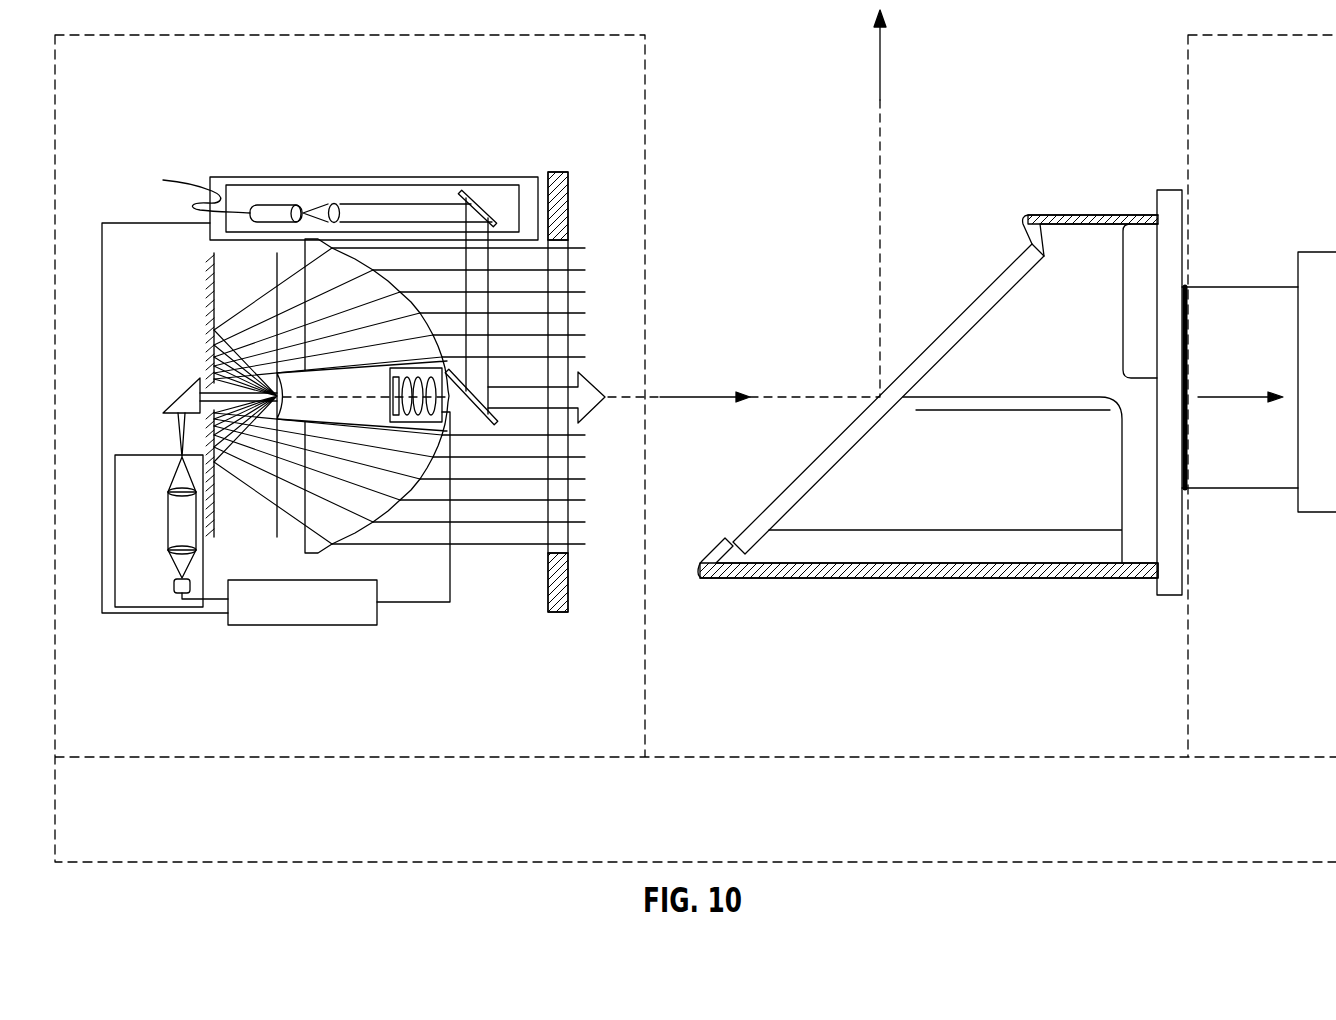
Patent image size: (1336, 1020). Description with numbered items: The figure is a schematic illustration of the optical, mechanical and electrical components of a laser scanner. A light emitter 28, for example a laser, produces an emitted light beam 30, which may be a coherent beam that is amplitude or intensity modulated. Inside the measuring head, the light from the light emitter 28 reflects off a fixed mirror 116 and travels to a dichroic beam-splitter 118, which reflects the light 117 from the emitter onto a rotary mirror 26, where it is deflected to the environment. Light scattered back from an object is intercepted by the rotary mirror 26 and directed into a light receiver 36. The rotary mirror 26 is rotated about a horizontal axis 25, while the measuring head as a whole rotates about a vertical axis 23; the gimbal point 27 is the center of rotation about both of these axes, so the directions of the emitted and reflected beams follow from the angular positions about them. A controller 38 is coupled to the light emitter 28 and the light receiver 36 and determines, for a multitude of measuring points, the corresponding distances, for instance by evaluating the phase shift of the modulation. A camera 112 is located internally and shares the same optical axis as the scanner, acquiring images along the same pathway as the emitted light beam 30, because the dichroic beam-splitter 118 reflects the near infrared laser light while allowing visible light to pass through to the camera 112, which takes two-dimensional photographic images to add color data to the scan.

The vertical axis 23 is at (880, 72).
The horizontal axis 25 is at (1225, 397).
The rotary mirror 26 is at (1000, 279).
The gimbal point 27 is at (880, 395).
The light emitter 28 is at (278, 205).
The emitted light beam 30 is at (705, 393).
The light receiver 36 is at (128, 535).
The controller 38 is at (300, 626).
The camera 112 is at (420, 424).
The fixed mirror 116 is at (478, 205).
The light 117 is at (477, 305).
The dichroic beam-splitter 118 is at (507, 423).